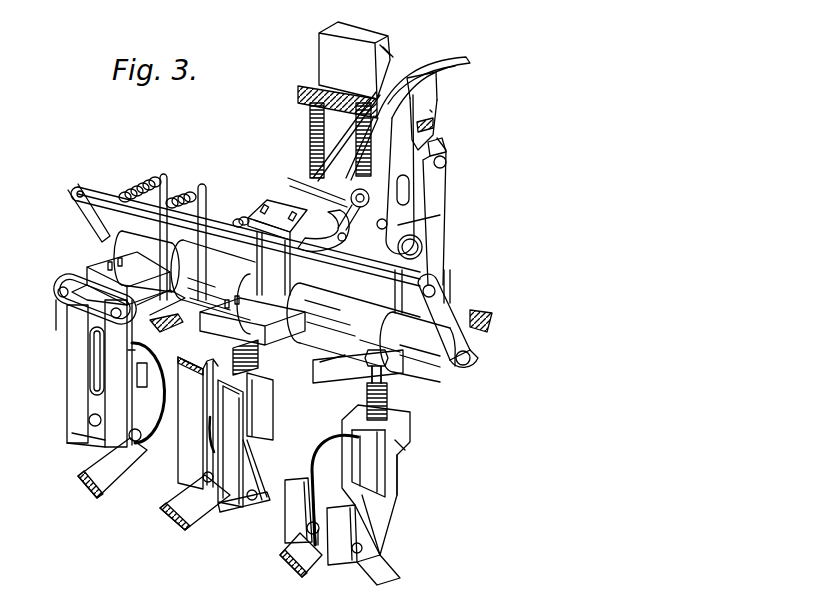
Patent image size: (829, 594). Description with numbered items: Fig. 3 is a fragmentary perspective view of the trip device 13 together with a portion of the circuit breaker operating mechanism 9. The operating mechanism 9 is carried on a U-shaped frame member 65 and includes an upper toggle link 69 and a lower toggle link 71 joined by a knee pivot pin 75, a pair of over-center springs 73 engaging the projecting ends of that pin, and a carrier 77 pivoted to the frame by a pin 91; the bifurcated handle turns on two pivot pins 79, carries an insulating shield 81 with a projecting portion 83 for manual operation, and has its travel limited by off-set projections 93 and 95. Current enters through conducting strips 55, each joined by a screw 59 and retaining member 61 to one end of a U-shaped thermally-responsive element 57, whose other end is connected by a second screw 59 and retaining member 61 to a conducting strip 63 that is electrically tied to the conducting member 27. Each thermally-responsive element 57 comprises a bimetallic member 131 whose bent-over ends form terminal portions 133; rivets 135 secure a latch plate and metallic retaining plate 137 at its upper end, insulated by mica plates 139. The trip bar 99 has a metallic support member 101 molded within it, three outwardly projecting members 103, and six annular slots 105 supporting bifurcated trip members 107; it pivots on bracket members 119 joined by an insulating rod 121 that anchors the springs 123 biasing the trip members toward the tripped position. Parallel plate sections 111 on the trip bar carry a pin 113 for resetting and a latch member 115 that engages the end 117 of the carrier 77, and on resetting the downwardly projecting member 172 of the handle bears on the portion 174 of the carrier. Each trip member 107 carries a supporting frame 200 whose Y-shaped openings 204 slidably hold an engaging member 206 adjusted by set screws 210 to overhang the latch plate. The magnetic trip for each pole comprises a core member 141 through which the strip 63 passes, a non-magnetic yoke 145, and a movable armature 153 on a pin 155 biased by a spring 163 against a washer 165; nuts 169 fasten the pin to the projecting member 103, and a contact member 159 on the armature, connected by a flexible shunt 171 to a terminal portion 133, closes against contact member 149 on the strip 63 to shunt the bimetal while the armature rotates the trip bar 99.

The operating mechanism 9 is at (455, 107).
The trip device 13 is at (221, 235).
The conducting member 27 is at (493, 323).
The conducting strips 55 is at (110, 478).
The thermally-responsive element 57 is at (188, 384).
The screw 59 is at (147, 440).
The retaining member 61 is at (356, 170).
The conducting strip 63 is at (67, 398).
The U-shaped frame member 65 is at (446, 198).
The upper toggle link 69 is at (332, 160).
The lower toggle link 71 is at (350, 196).
The over-center springs 73 is at (310, 120).
The knee pivot pin 75 is at (420, 219).
The carrier 77 is at (356, 148).
The pivot pins 79 is at (423, 247).
The insulating shield 81 is at (468, 60).
The projecting portion 83 is at (382, 42).
The pin 91 is at (447, 165).
The off-set projection 93 is at (388, 224).
The off-set projection 95 is at (446, 146).
The trip bar 99 is at (353, 313).
The metallic support member 101 is at (475, 358).
The outwardly projecting members 103 is at (176, 293).
The annular slots 105 is at (130, 236).
The trip members 107 is at (88, 262).
The plate sections 111 is at (305, 243).
The pin 113 is at (323, 232).
The latch member 115 is at (260, 208).
The end of carrier 117 is at (285, 182).
The bracket members 119 is at (78, 220).
The insulating rod 121 is at (434, 285).
The springs 123 is at (142, 185).
The bimetallic member 131 is at (67, 350).
The terminal portions 133 is at (90, 446).
The rivets 135 is at (58, 292).
The metallic retaining plate 137 is at (70, 300).
The mica plates 139 is at (54, 285).
The core member 141 is at (160, 395).
The yoke 145 is at (90, 360).
The contact member 149 is at (135, 372).
The movable armature 153 is at (128, 350).
The pin 155 is at (345, 322).
The contact member 159 is at (400, 443).
The spring 163 is at (233, 358).
The washer 165 is at (318, 362).
The nuts 169 is at (410, 352).
The flexible shunt 171 is at (207, 424).
The downwardly projecting member 172 is at (438, 80).
The portion of carrier 174 is at (425, 105).
The supporting frame 200 is at (135, 250).
The Y-shaped openings 204 is at (85, 268).
The engaging member 206 is at (196, 358).
The set screws 210 is at (108, 261).